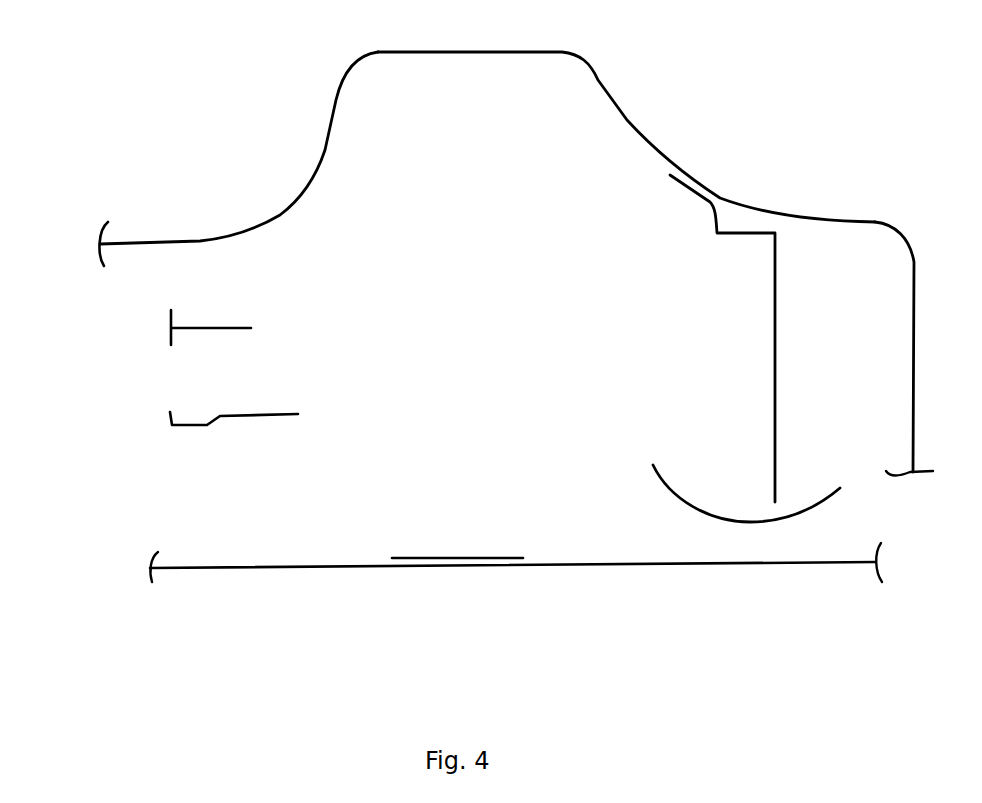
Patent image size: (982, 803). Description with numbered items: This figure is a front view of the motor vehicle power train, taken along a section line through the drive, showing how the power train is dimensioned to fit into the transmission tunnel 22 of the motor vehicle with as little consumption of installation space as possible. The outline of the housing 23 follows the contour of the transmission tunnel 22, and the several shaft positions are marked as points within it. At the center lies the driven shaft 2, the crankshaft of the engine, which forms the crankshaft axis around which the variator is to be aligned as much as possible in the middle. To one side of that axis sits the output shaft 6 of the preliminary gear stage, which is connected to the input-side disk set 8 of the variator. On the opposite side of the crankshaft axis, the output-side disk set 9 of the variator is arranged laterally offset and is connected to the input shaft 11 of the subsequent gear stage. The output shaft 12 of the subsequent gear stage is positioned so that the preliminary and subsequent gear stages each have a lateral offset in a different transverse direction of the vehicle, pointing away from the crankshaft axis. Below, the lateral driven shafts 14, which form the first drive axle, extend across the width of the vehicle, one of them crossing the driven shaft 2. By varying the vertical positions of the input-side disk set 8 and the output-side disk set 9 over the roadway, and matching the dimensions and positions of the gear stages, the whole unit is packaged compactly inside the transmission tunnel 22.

The driven shaft 2 is at (460, 293).
The output shaft of the preliminary gear stage 6 is at (390, 358).
The input-side disk set 8 is at (320, 278).
The output-side disk set 9 is at (755, 493).
The input shaft of the subsequent gear stage 11 is at (584, 393).
The output shaft of the subsequent gear stage 12 is at (680, 364).
The lateral driven shafts 14 is at (813, 318).
The transmission tunnel 22 is at (628, 121).
The housing 23 is at (352, 126).